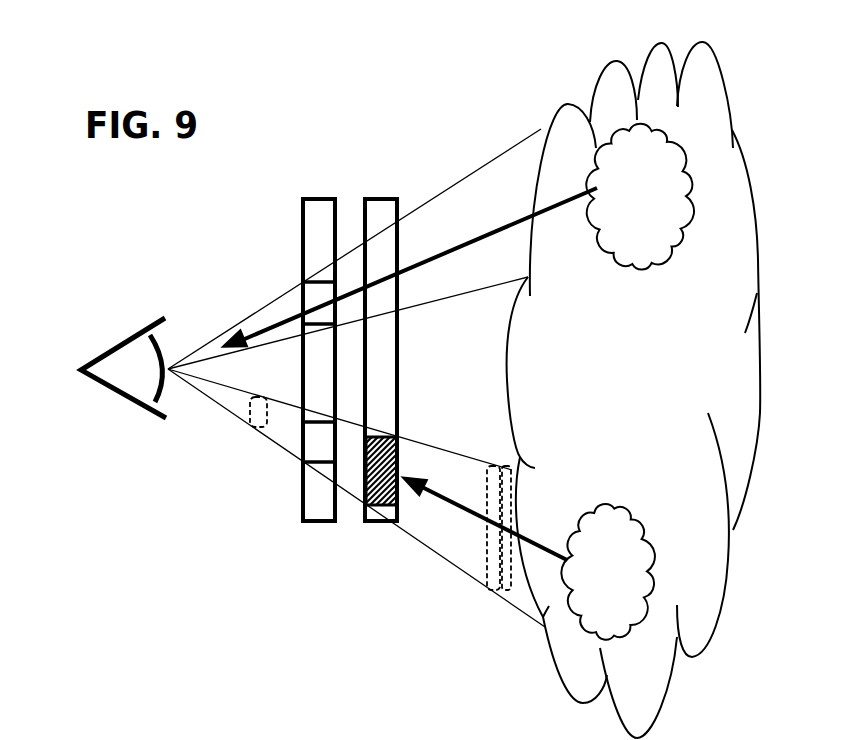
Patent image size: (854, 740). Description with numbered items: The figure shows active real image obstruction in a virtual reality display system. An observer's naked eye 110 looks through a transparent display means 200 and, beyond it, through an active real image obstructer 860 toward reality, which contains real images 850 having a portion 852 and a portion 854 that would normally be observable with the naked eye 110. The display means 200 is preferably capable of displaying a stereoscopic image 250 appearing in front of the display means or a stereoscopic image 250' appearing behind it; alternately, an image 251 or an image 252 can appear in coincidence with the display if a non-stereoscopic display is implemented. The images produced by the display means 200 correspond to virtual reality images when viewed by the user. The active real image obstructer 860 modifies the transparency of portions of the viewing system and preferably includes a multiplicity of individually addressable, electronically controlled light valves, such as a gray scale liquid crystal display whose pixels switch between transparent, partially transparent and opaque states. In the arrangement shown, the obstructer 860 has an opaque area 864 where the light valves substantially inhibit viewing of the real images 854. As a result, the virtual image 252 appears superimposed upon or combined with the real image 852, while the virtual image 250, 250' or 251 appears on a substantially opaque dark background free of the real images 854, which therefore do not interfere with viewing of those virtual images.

The naked eye 110 is at (133, 387).
The display means 200 is at (317, 196).
The image 252 is at (310, 290).
The image 251 is at (311, 447).
The active real image obstructer 860 is at (387, 195).
The opaque area 864 is at (375, 524).
The stereoscopic image 250 is at (212, 434).
The stereoscopic image 250' is at (459, 551).
The real images 850 is at (634, 390).
The portion of real images 852 is at (640, 197).
The portion of real images 854 is at (608, 572).